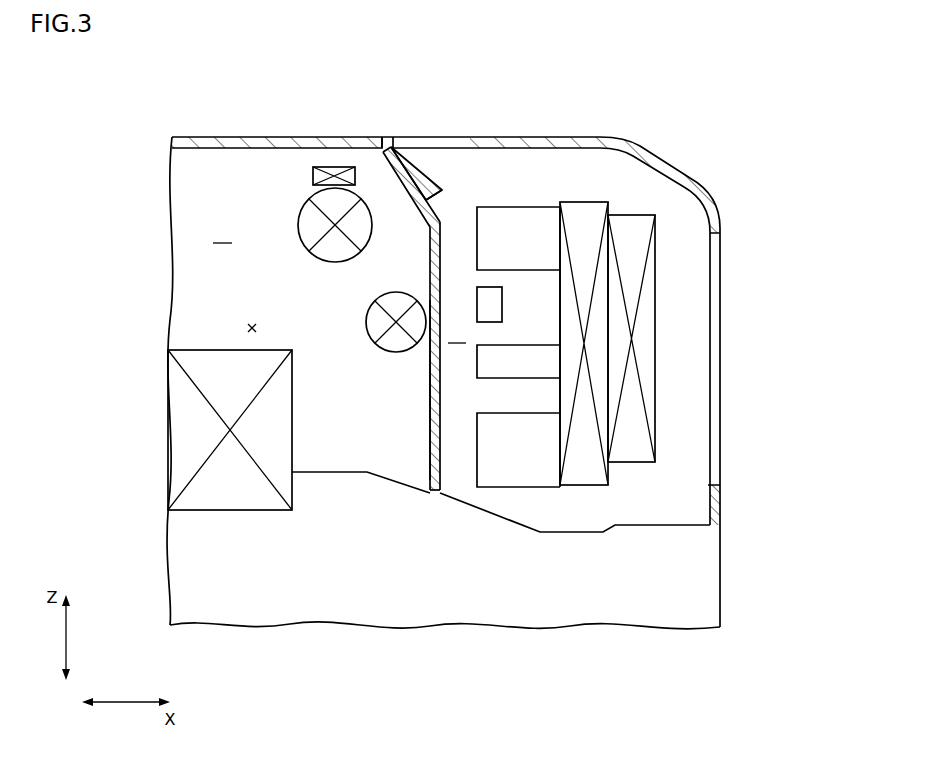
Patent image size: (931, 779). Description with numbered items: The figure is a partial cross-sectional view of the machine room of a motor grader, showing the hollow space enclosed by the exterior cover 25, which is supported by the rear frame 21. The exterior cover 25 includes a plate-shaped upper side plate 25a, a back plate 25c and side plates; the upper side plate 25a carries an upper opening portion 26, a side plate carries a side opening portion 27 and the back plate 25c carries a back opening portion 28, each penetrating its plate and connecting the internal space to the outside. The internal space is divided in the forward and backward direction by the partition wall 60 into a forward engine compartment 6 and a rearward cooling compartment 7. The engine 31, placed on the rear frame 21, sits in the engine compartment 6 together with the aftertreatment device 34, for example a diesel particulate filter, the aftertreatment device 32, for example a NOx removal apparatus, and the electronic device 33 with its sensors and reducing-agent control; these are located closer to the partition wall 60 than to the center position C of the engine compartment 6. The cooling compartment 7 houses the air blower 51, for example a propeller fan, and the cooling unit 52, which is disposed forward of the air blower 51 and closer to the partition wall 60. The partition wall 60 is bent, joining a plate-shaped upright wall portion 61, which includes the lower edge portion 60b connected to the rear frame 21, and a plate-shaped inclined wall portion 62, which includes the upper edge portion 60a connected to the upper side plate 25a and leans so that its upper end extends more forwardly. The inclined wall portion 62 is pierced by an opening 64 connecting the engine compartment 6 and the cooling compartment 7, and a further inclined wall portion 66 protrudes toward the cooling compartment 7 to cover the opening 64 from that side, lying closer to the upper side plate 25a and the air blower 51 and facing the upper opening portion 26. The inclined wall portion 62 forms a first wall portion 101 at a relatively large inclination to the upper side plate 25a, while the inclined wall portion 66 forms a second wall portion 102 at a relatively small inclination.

The engine compartment 6 is at (222, 232).
The cooling compartment 7 is at (457, 332).
The rear frame 21 is at (435, 593).
The exterior cover 25 is at (573, 143).
The upper side plate 25a is at (290, 145).
The back plate 25c is at (722, 230).
The upper opening portion 26 is at (436, 145).
The side opening portion 27 is at (522, 228).
The back opening portion 28 is at (713, 338).
The engine 31 is at (188, 432).
The aftertreatment device 32 is at (307, 225).
The electronic device 33 is at (335, 172).
The aftertreatment device 34 is at (378, 320).
The air blower 51 is at (648, 292).
The cooling unit 52 is at (598, 382).
The partition wall 60 is at (447, 231).
The upper edge portion 60a is at (398, 160).
The lower edge portion 60b is at (437, 493).
The upright wall portion 61 is at (430, 428).
The inclined wall portion 62 is at (362, 96).
The opening 64 is at (420, 182).
The inclined wall portion 66 is at (455, 119).
The first wall portion 101 is at (384, 154).
The second wall portion 102 is at (436, 192).
The center position C is at (250, 328).